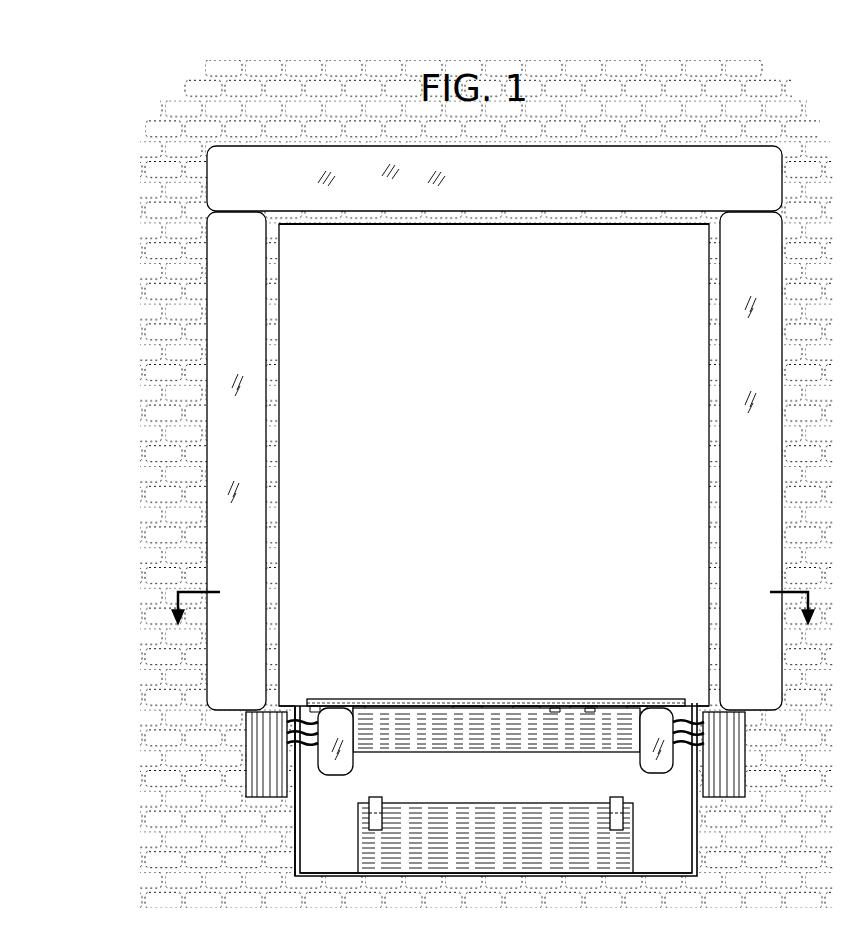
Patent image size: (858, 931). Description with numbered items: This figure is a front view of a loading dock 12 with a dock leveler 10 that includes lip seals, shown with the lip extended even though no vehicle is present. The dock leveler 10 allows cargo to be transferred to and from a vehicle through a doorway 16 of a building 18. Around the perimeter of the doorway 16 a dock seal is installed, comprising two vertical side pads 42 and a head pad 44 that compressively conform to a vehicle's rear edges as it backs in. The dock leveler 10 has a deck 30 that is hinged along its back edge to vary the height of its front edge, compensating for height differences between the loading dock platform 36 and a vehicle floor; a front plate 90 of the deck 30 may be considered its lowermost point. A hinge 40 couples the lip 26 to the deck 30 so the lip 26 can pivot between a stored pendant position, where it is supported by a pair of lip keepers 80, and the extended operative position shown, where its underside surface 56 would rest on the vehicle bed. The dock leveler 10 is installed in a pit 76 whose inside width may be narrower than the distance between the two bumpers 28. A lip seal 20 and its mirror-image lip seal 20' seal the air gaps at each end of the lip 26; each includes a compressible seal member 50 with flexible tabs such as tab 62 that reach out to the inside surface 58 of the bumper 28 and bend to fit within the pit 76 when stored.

The dock leveler 10 is at (577, 651).
The loading dock 12 is at (163, 870).
The doorway 16 is at (492, 468).
The building 18 is at (674, 122).
The lip seal 20 is at (467, 792).
The lip seal 20' is at (718, 826).
The lip 26 is at (447, 698).
The bumper 28 is at (245, 782).
The deck 30 is at (443, 753).
The loading dock platform 36 is at (288, 714).
The hinge 40 is at (588, 712).
The side pads 42 is at (249, 318).
The head pad 44 is at (559, 188).
The seal member 50 is at (354, 740).
The underside surface 56 is at (550, 712).
The inside surface 58 is at (303, 785).
The flexible tab 62 is at (293, 738).
The pit 76 is at (690, 858).
The lip keepers 80 is at (376, 797).
The front plate 90 is at (573, 737).